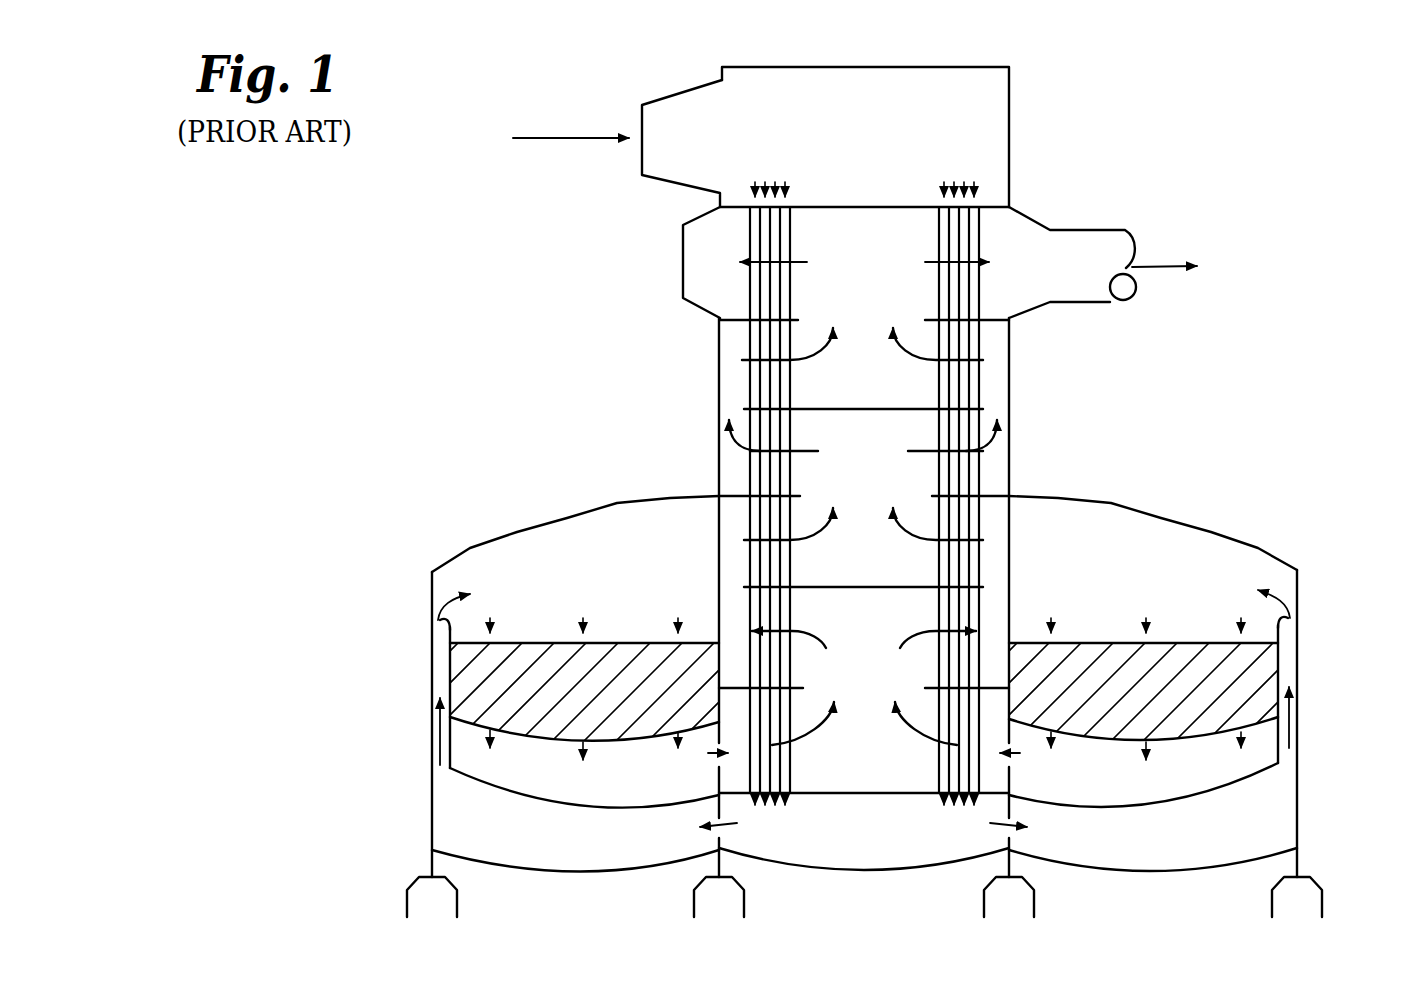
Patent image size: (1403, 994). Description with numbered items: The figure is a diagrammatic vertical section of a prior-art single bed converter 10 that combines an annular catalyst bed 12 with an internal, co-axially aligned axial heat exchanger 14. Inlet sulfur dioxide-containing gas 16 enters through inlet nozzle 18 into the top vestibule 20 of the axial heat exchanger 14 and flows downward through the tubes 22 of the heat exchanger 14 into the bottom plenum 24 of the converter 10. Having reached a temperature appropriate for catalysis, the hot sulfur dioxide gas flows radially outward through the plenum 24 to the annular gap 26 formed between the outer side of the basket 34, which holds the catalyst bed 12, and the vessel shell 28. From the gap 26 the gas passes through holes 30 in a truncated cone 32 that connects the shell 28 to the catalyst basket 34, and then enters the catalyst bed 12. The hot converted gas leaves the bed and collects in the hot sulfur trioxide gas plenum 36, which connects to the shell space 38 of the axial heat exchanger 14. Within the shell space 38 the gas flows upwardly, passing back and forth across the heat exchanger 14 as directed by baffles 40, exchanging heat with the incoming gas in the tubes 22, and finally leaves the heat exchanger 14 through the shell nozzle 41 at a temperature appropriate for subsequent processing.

The single bed converter 10 is at (548, 515).
The annular catalyst bed 12 is at (553, 643).
The axial heat exchanger 14 is at (1012, 405).
The inlet sulfur dioxide-containing gas 16 is at (590, 137).
The inlet nozzle 18 is at (690, 88).
The top vestibule 20 is at (985, 107).
The tubes 22 is at (982, 340).
The bottom plenum 24 is at (868, 853).
The annular gap 26 is at (440, 658).
The vessel shell 28 is at (432, 757).
The holes 30 is at (443, 620).
The truncated cone 32 is at (452, 624).
The basket 34 is at (450, 718).
The hot sulfur trioxide gas plenum 36 is at (1160, 780).
The shell space 38 is at (875, 726).
The baffles 40 is at (798, 320).
The shell nozzle 41 is at (1043, 225).